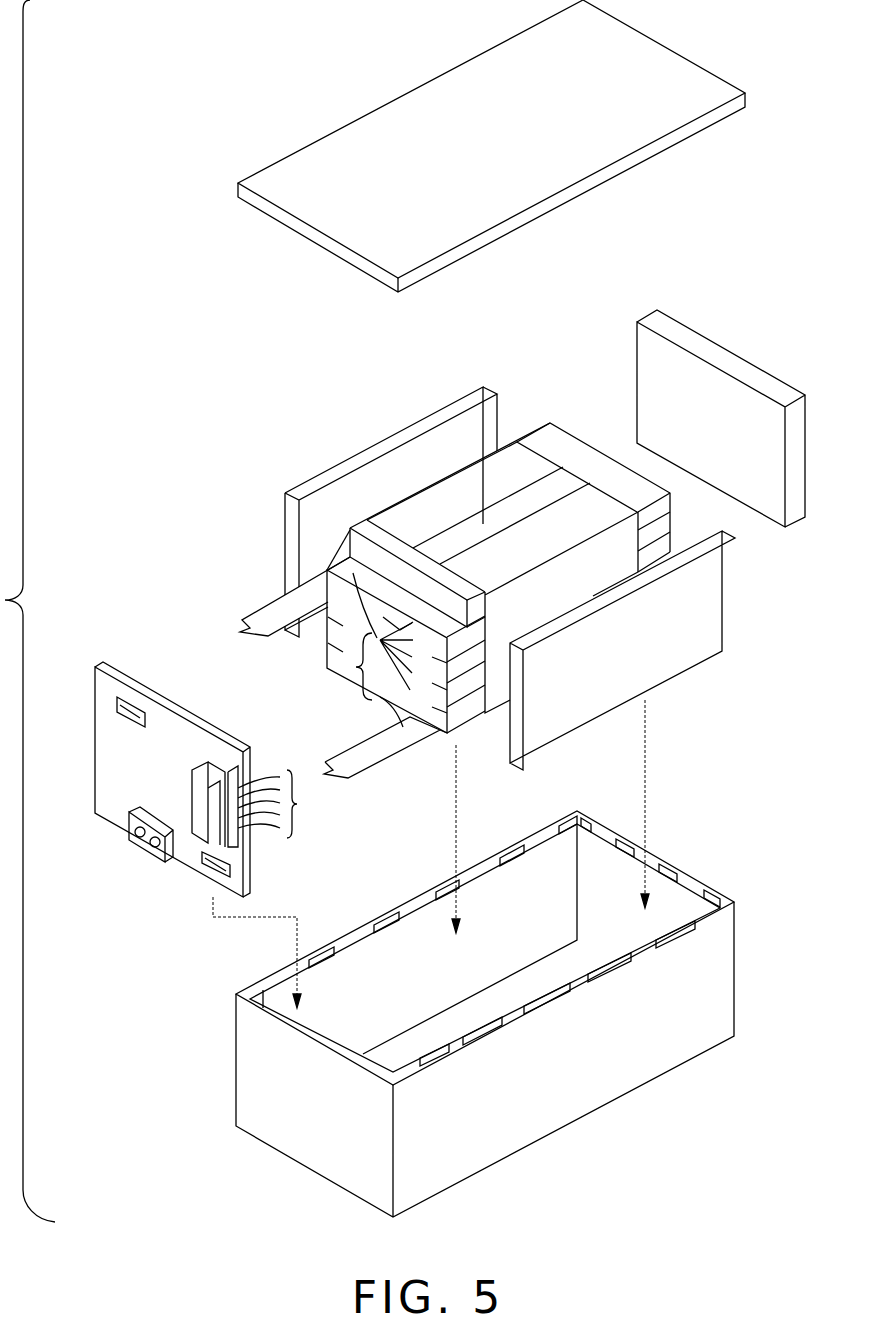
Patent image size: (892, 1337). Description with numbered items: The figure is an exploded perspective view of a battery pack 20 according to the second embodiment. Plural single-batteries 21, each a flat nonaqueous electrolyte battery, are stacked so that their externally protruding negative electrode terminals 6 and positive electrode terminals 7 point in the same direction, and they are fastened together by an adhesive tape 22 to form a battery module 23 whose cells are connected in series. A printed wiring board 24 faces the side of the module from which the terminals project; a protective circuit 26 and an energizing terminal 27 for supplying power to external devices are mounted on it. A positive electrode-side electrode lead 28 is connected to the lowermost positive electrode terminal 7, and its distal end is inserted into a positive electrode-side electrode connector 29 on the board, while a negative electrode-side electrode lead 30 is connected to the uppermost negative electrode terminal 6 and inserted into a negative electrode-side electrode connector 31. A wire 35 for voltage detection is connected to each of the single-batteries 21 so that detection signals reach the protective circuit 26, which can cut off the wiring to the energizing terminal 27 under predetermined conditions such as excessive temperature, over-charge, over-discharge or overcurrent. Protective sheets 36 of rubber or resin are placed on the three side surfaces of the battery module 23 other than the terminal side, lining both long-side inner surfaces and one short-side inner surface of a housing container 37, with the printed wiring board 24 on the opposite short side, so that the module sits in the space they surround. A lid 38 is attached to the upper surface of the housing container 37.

The battery pack 20 is at (128, 168).
The lid 38 is at (687, 77).
The protective sheet 36 is at (353, 468).
The battery module 23 is at (438, 470).
The adhesive tape 22 is at (570, 507).
The single-battery 21 is at (693, 547).
The positive electrode terminal 7 is at (413, 623).
The negative electrode terminal 6 is at (328, 568).
The negative electrode-side electrode lead 30 is at (260, 612).
The positive electrode-side electrode lead 28 is at (372, 760).
The wire for voltage detection 35 is at (355, 667).
The printed wiring board 24 is at (128, 668).
The negative electrode-side electrode connector 31 is at (137, 707).
The protective circuit 26 is at (205, 770).
The energizing terminal 27 is at (152, 852).
The positive electrode-side electrode connector 29 is at (232, 873).
The housing container 37 is at (724, 976).